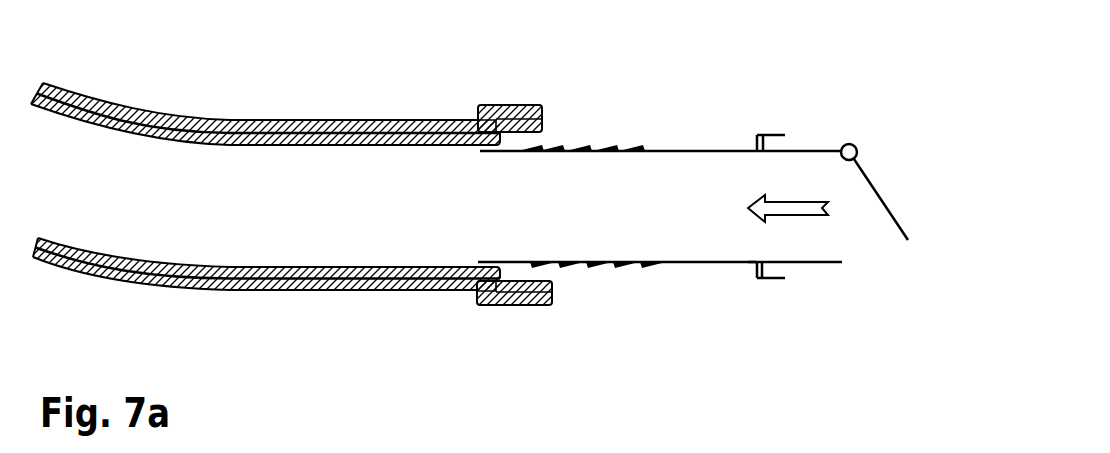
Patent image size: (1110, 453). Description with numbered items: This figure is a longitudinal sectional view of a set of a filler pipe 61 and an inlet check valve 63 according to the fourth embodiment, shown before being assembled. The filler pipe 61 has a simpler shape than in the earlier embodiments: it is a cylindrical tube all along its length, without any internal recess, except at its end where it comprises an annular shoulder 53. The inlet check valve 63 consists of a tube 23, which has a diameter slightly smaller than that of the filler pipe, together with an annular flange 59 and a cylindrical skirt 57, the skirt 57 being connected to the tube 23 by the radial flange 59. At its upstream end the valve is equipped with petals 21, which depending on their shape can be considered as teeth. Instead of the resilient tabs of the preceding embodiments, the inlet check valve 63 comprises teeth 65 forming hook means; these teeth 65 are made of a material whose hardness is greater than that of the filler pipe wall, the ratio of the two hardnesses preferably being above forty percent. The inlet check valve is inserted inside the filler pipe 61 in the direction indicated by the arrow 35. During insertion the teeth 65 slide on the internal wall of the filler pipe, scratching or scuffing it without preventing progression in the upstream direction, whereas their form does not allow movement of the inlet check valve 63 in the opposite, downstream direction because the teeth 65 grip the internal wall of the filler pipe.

The filler pipe 61 is at (384, 87).
The annular shoulder 53 is at (510, 106).
The inlet check valve 63 is at (703, 113).
The arrow 35 is at (798, 207).
The petals 21 is at (516, 265).
The tube 23 is at (803, 265).
The teeth 65 is at (532, 268).
The skirt 57 is at (770, 279).
The flange 59 is at (753, 267).